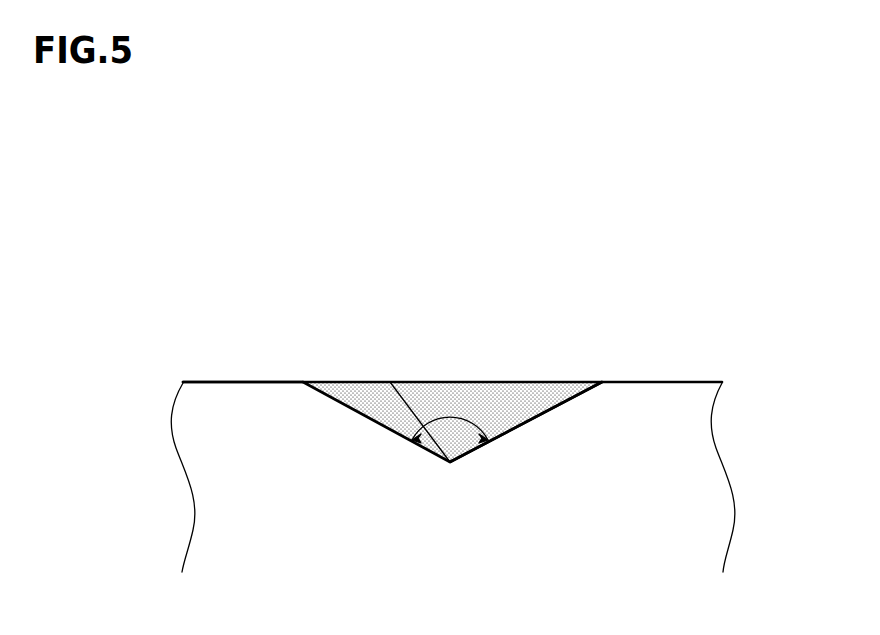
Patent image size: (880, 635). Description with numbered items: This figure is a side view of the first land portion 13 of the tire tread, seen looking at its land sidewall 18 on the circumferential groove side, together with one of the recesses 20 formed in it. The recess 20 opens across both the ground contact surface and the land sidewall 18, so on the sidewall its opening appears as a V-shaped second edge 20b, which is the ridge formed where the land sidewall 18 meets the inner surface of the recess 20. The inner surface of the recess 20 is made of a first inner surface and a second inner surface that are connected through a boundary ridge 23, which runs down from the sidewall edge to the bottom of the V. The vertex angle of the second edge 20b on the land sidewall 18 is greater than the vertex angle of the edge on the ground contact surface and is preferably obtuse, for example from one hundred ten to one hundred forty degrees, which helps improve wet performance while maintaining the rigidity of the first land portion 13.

The first land portion 13 is at (222, 382).
The land sidewall 18 is at (248, 463).
The recess 20 is at (367, 402).
The second edge 20b is at (543, 413).
The boundary ridge 23 is at (413, 440).